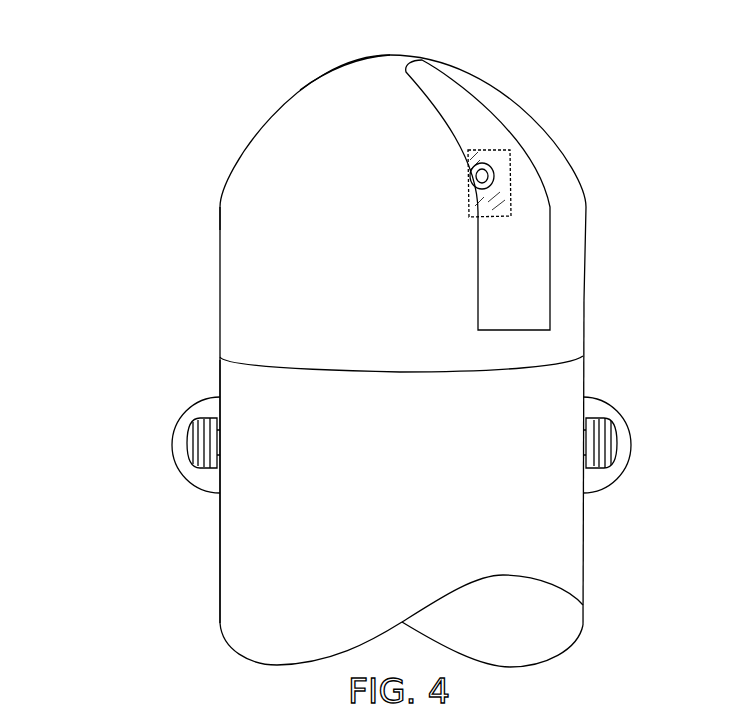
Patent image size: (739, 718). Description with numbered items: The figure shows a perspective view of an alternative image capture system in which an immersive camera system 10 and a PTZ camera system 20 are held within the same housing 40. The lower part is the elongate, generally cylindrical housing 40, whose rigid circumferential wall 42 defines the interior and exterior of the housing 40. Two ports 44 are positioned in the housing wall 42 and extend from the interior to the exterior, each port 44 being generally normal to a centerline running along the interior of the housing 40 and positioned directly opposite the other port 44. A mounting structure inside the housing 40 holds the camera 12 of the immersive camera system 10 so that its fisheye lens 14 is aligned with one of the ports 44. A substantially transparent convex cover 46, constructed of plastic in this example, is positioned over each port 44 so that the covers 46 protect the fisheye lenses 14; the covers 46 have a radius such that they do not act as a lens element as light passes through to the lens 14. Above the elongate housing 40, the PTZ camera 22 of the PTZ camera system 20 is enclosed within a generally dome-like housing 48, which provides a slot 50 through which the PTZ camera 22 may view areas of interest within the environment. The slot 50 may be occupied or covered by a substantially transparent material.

The immersive camera system 10 is at (140, 512).
The camera 12 is at (605, 418).
The fisheye lens 14 is at (628, 440).
The PTZ camera system 20 is at (226, 126).
The PTZ camera 22 is at (492, 151).
The housing 40 is at (563, 538).
The circumferential wall 42 is at (584, 592).
The port 44 is at (220, 400).
The convex cover 46 is at (178, 445).
The dome-like housing 48 is at (368, 92).
The slot 50 is at (478, 288).